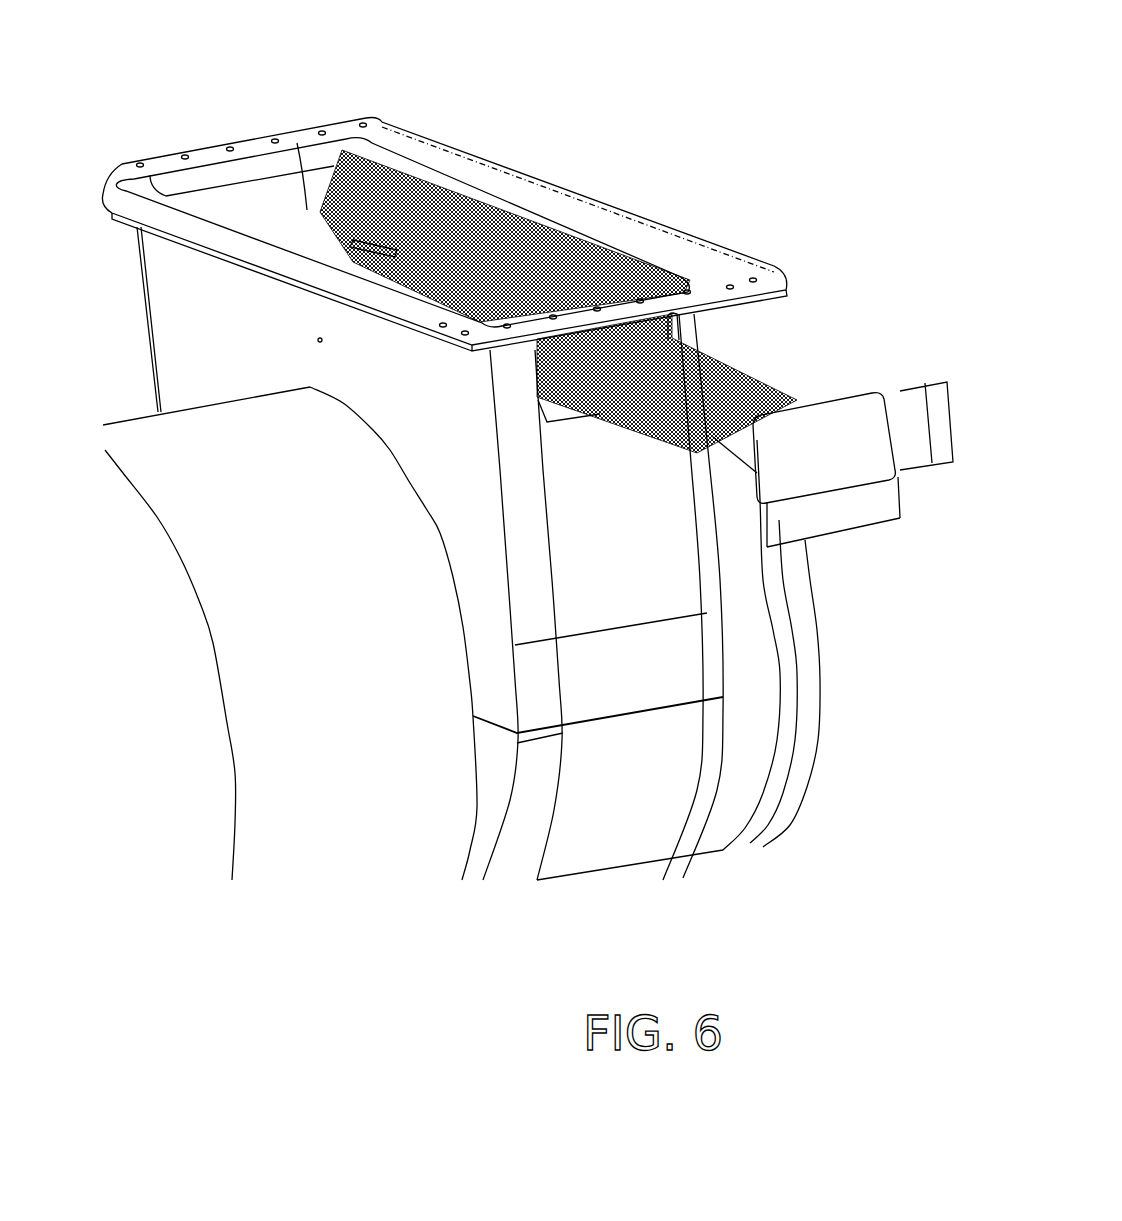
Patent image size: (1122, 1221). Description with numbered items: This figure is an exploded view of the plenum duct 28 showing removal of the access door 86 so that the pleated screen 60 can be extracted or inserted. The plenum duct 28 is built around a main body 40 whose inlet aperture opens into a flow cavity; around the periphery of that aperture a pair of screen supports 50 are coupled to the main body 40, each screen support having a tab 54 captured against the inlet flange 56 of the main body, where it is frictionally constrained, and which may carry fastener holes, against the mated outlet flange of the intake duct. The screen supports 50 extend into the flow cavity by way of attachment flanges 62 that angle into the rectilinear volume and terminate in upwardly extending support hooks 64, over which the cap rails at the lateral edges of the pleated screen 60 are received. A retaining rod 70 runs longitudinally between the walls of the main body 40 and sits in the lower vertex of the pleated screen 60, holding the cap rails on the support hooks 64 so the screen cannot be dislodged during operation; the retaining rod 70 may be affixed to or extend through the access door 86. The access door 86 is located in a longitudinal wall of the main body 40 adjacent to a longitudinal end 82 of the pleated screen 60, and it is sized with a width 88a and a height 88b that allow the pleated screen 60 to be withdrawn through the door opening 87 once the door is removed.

The plenum duct 28 is at (640, 110).
The main body 40 is at (235, 335).
The screen supports 50 is at (643, 257).
The tab 54 is at (503, 187).
The inlet flange 56 is at (730, 278).
The pleated screen 60 is at (708, 383).
The attachment flanges 62 is at (593, 260).
The support hooks 64 is at (373, 237).
The retaining rod 70 is at (741, 449).
The longitudinal end 82 is at (760, 392).
The access door 86 is at (838, 457).
The door opening 87 is at (673, 332).
The width 88a is at (820, 537).
The height 88b is at (930, 428).